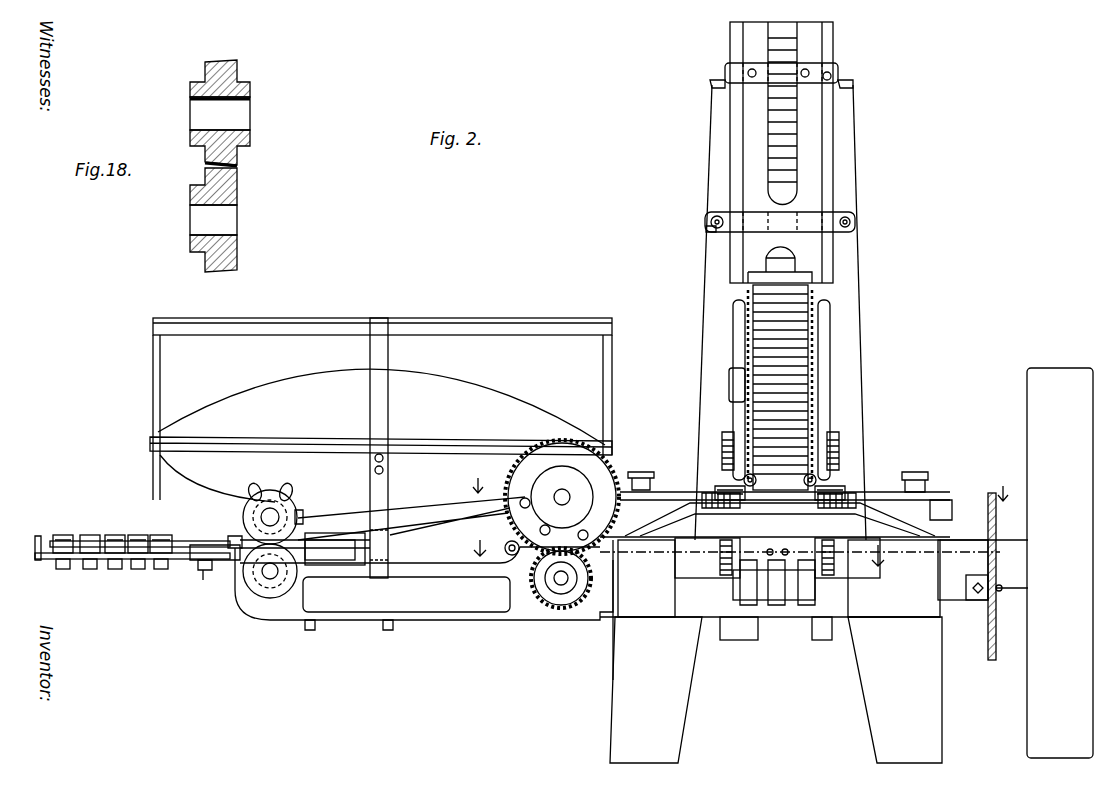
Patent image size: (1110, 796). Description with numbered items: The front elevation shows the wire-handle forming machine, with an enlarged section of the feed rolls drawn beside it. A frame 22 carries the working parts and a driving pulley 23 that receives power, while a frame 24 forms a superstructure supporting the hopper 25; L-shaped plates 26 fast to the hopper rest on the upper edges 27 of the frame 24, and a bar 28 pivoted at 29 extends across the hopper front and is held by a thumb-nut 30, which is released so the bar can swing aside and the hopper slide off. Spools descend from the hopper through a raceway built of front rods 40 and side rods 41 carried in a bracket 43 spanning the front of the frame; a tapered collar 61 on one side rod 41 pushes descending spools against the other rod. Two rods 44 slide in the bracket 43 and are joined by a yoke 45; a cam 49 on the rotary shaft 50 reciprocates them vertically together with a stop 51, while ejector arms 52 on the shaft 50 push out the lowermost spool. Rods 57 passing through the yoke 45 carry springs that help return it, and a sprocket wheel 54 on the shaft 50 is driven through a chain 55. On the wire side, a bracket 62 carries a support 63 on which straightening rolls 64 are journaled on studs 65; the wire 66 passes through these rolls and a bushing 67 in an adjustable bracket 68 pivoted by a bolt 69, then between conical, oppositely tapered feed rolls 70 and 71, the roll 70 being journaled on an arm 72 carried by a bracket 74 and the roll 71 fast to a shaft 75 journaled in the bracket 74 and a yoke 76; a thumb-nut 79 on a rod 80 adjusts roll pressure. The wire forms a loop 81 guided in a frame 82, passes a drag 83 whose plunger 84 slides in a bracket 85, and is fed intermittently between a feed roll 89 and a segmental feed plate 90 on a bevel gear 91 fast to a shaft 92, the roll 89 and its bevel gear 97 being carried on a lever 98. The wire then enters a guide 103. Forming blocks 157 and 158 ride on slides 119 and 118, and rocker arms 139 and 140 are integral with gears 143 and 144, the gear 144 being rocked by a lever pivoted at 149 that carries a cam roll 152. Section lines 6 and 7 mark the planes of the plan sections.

In FIG. 2, the section line 6— 6 is at (741, 620).
In FIG. 2, the section line 7— 7 is at (737, 552).
In FIG. 2, the frame 22 is at (612, 610).
In FIG. 2, the driving pulley 23 is at (1028, 420).
In FIG. 2, the frame 24 is at (862, 282).
In FIG. 2, the hopper 25 is at (820, 48).
In FIG. 2, the L-shaped plates 26 is at (724, 72).
In FIG. 2, the upper edges 27 is at (712, 86).
In FIG. 2, the bar 28 is at (810, 220).
In FIG. 2, the pivot 29 is at (858, 218).
In FIG. 2, the thumb-nut 30 is at (712, 218).
In FIG. 2, the front rods 40 is at (733, 312).
In FIG. 2, the side rods 41 is at (732, 338).
In FIG. 2, the bracket or bridge 43 is at (840, 500).
In FIG. 2, the rods 44 is at (745, 478).
In FIG. 2, the yoke 45 is at (718, 486).
In FIG. 2, the cam 49 is at (776, 605).
In FIG. 2, the rotary shaft 50 is at (848, 598).
In FIG. 2, the stop 51 is at (780, 405).
In FIG. 2, the ejector arms 52 is at (738, 640).
In FIG. 2, the sprocket wheel 54 is at (975, 602).
In FIG. 2, the chain 55 is at (988, 532).
In FIG. 2, the rods 57 is at (724, 436).
In FIG. 2, the tapered collar 61 is at (728, 386).
In FIG. 2, the bracket 62 is at (450, 620).
In FIG. 2, the support 63 is at (182, 560).
In FIG. 2, the straightening rolls 64 is at (84, 534).
In FIG. 2, the studs 65 is at (60, 534).
In FIG. 18, the wire 66 is at (225, 165).
In FIG. 2, the wire 66 is at (34, 545).
In FIG. 2, the bushing 67 is at (232, 540).
In FIG. 2, the adjustable bracket 68 is at (208, 572).
In FIG. 2, the bolt 69 is at (203, 582).
In FIG. 18, the feed roll 70 is at (238, 76).
In FIG. 2, the feed roll 70 is at (244, 512).
In FIG. 18, the feed roll 71 is at (238, 248).
In FIG. 2, the feed roll 71 is at (252, 594).
In FIG. 2, the arm 72 is at (280, 512).
In FIG. 2, the bracket 74 is at (365, 540).
In FIG. 2, the shaft 75 is at (270, 580).
In FIG. 2, the yoke 76 is at (320, 566).
In FIG. 2, the thumb-nut 79 is at (254, 486).
In FIG. 2, the rod 80 is at (283, 486).
In FIG. 2, the loop 81 is at (518, 392).
In FIG. 2, the frame 82 is at (612, 372).
In FIG. 2, the frictional device or drag 83 is at (411, 518).
In FIG. 2, the plunger 84 is at (504, 552).
In FIG. 2, the bracket 85 is at (512, 556).
In FIG. 2, the feed roll 89 is at (556, 586).
In FIG. 2, the segmental feed plate 90 is at (510, 497).
In FIG. 2, the bevel gear 91 is at (556, 447).
In FIG. 2, the shaft 92 is at (641, 470).
In FIG. 2, the bevel gear 97 is at (540, 600).
In FIG. 2, the lever 98 is at (562, 594).
In FIG. 2, the guide 103 is at (628, 600).
In FIG. 2, the slide 118 is at (906, 581).
In FIG. 2, the slide 119 is at (690, 578).
In FIG. 2, the rocker arm 139 is at (718, 548).
In FIG. 2, the rocker arm 140 is at (828, 556).
In FIG. 2, the gear 143 is at (721, 509).
In FIG. 2, the gear 144 is at (834, 509).
In FIG. 2, the pivot 149 is at (915, 472).
In FIG. 2, the cam roll 152 is at (948, 500).
In FIG. 2, the forming block 157 is at (730, 568).
In FIG. 2, the forming block 158 is at (914, 598).